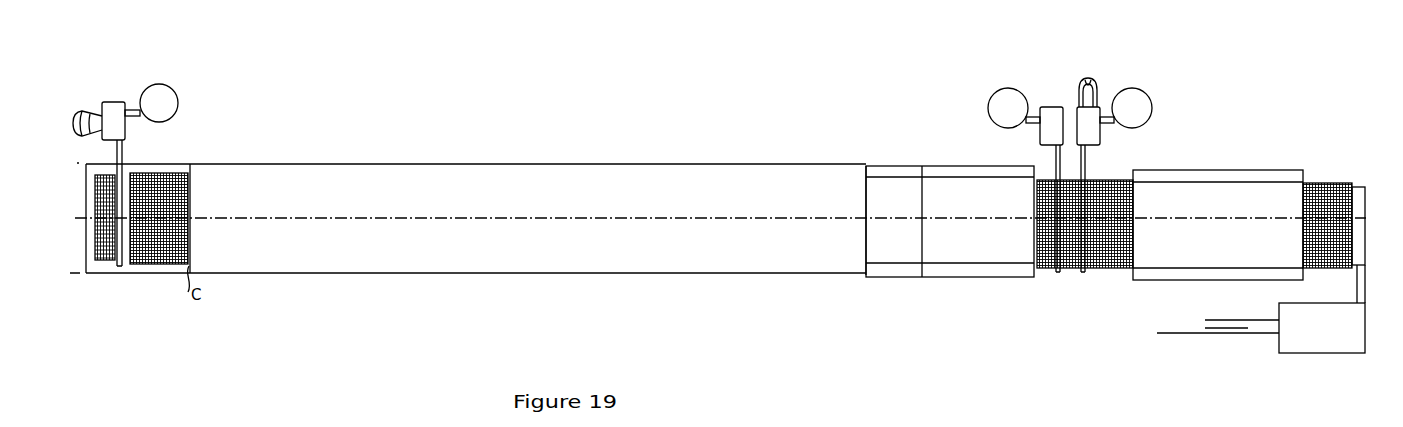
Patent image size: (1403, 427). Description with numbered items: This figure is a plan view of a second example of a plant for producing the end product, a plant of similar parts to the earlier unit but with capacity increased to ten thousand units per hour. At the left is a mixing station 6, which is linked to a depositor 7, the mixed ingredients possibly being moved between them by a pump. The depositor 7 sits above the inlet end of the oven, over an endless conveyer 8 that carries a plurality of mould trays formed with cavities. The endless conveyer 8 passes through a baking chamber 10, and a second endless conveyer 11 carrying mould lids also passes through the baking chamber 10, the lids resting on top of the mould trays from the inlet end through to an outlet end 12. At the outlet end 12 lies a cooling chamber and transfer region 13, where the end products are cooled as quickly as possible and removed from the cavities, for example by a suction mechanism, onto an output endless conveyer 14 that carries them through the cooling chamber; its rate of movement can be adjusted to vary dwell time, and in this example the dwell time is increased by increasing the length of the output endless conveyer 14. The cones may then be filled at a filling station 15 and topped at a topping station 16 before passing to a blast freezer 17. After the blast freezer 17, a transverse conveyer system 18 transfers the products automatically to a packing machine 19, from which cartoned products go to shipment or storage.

The mixing station 6 is at (178, 87).
The depositor 7 is at (122, 252).
The endless conveyer 8 is at (105, 262).
The baking chamber 10 is at (571, 161).
The second endless conveyer 11 is at (160, 180).
The outlet end 12 is at (866, 250).
The cooling chamber and transfer region 13 is at (1002, 290).
The output endless conveyer 14 is at (1110, 266).
The filling station 15 is at (1042, 106).
The topping station 16 is at (1090, 148).
The blast freezer 17 is at (1205, 170).
The transverse conveyer system 18 is at (1358, 205).
The packing machine 19 is at (1334, 335).